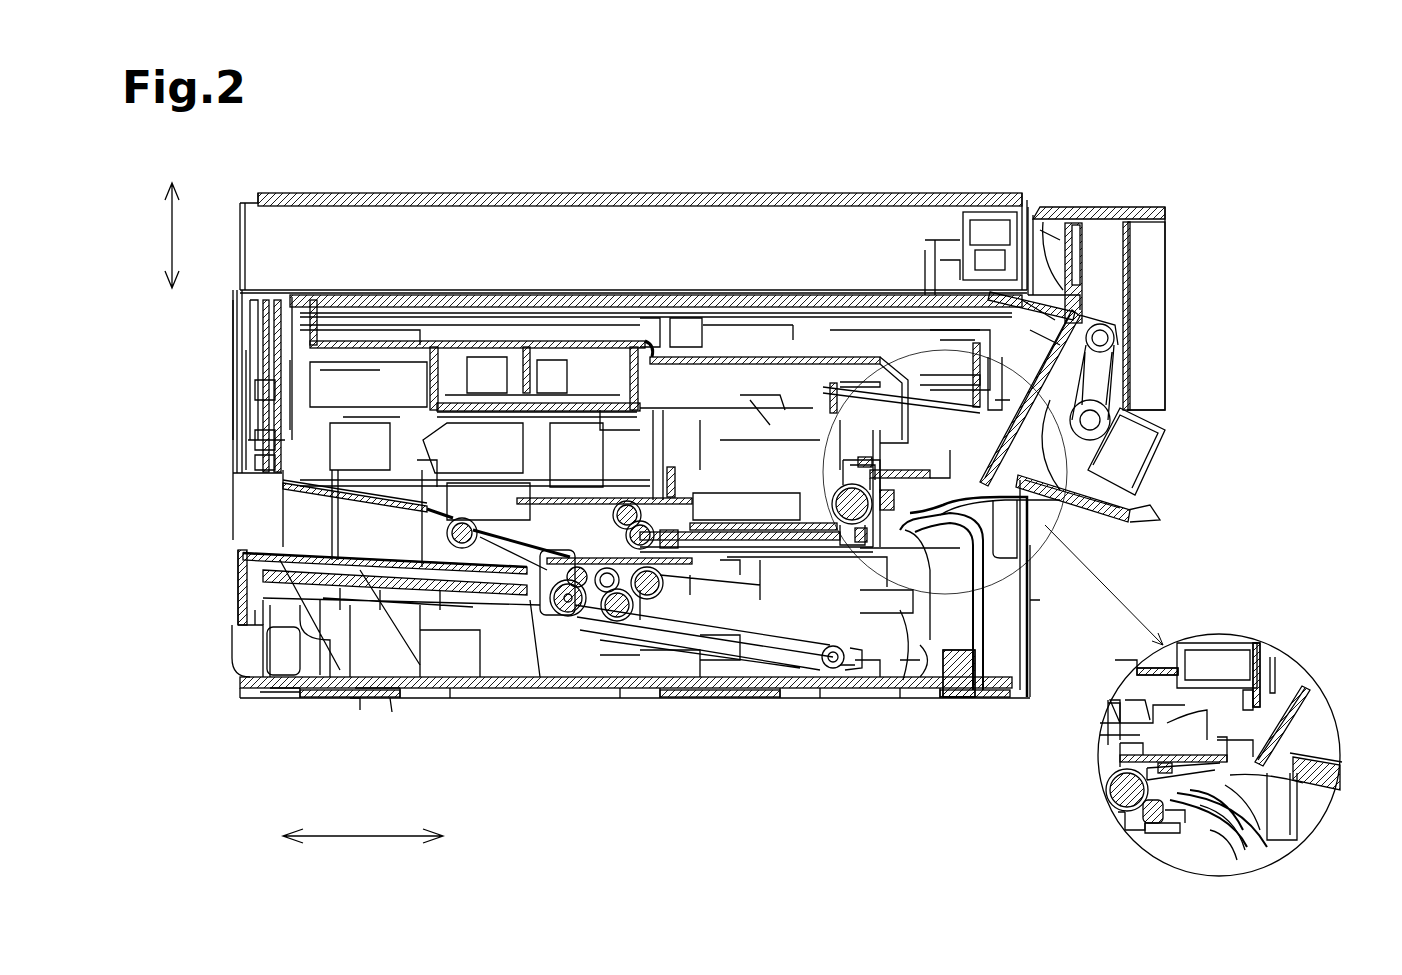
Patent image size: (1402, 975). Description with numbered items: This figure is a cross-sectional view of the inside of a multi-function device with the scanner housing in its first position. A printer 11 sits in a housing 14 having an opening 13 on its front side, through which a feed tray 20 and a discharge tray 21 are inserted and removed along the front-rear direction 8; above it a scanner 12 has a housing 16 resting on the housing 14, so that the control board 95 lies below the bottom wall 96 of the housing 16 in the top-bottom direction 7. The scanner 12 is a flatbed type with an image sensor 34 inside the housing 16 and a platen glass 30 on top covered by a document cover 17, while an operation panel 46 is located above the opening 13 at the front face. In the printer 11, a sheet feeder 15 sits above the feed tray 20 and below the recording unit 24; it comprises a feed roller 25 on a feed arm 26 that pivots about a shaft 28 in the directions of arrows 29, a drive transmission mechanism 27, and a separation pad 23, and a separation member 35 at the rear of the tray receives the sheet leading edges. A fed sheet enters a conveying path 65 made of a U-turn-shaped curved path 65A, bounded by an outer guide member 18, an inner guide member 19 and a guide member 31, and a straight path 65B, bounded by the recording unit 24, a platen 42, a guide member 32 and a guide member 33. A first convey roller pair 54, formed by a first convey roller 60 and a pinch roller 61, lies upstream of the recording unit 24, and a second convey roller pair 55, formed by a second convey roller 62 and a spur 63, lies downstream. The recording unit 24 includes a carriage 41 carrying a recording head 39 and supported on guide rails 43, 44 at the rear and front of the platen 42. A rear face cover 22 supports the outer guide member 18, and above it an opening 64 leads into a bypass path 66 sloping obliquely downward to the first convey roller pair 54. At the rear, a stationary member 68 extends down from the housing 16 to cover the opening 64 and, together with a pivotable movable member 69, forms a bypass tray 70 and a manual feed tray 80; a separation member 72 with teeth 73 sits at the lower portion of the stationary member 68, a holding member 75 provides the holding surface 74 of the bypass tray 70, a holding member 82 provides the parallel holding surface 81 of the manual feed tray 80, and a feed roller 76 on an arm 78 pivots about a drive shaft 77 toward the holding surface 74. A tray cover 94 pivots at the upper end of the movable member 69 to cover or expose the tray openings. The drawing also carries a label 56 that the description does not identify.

The top-bottom direction 7 is at (172, 240).
The front-rear direction 8 is at (363, 836).
The printer 11 is at (218, 737).
The scanner 12 is at (1022, 183).
The opening 13 is at (226, 494).
The housing 14 is at (300, 698).
The sheet feeder 15 is at (658, 655).
The housing 16 is at (222, 381).
The document cover 17 is at (868, 192).
The outer guide member 18 is at (1030, 628).
The inner guide member 19 is at (938, 660).
The feed tray 20 is at (373, 690).
The discharge tray 21 is at (258, 555).
The rear face cover 22 is at (1030, 600).
The separation pad 23 is at (825, 660).
The recording unit 24 is at (735, 493).
The feed roller 25 is at (862, 680).
The feed arm 26 is at (790, 645).
The drive transmission mechanism 27 is at (650, 600).
The shaft 28 is at (566, 616).
The arrows 29 is at (905, 645).
The platen glass 30 is at (430, 340).
The guide member 31 is at (1300, 742).
The guide member 32 is at (462, 550).
The guide member 33 is at (505, 590).
The image sensor 34 is at (812, 313).
The separation member 35 is at (990, 680).
The recording head 39 is at (693, 320).
The carriage 41 is at (775, 440).
The platen 42 is at (725, 650).
The guide rail 43 is at (1125, 755).
The guide rail 44 is at (490, 365).
The operation panel 46 is at (233, 418).
The first convey roller pair 54 is at (1036, 796).
The second convey roller pair 55 is at (618, 134).
The roller support 56 is at (1148, 823).
The first convey roller 60 is at (1108, 797).
The pinch roller 61 is at (1120, 812).
The second convey roller 62 is at (620, 503).
The spur 63 is at (575, 430).
The opening 64 is at (1285, 812).
The conveying path 65 is at (665, 500).
The curved path 65A is at (1108, 705).
The straight path 65B is at (600, 590).
The bypass path 66 is at (1262, 835).
The stationary member 68 is at (1186, 521).
The movable member 69 is at (1165, 260).
The bypass tray 70 is at (1040, 340).
The separation member 72 is at (1062, 497).
The teeth 73 is at (1322, 760).
The holding surface 74 is at (1105, 408).
The holding member 75 is at (1140, 483).
The feed roller 76 is at (1130, 430).
The drive shaft 77 is at (1108, 332).
The arm 78 is at (1110, 372).
The manual feed tray 80 is at (1107, 266).
The holding surface 81 is at (1272, 657).
The holding member 82 is at (1000, 330).
The tray cover 94 is at (1070, 222).
The control board 95 is at (372, 345).
The bottom wall 96 is at (333, 345).